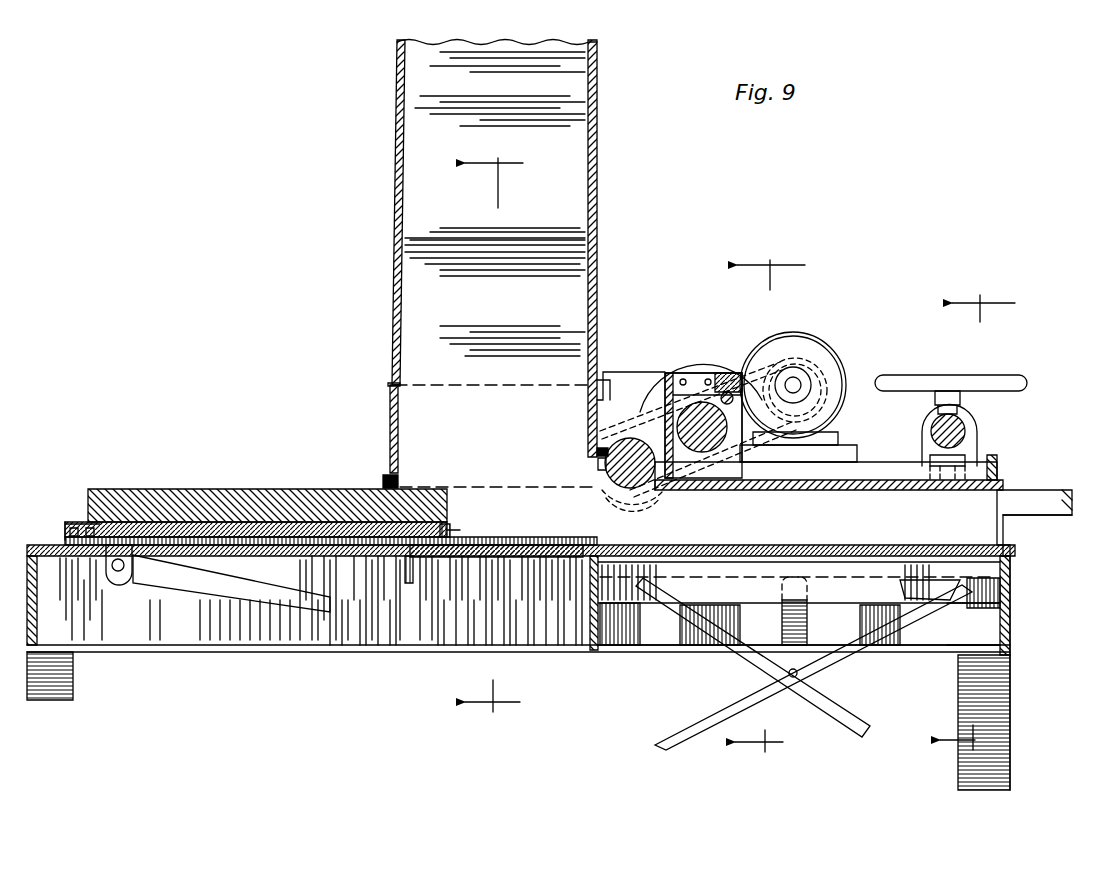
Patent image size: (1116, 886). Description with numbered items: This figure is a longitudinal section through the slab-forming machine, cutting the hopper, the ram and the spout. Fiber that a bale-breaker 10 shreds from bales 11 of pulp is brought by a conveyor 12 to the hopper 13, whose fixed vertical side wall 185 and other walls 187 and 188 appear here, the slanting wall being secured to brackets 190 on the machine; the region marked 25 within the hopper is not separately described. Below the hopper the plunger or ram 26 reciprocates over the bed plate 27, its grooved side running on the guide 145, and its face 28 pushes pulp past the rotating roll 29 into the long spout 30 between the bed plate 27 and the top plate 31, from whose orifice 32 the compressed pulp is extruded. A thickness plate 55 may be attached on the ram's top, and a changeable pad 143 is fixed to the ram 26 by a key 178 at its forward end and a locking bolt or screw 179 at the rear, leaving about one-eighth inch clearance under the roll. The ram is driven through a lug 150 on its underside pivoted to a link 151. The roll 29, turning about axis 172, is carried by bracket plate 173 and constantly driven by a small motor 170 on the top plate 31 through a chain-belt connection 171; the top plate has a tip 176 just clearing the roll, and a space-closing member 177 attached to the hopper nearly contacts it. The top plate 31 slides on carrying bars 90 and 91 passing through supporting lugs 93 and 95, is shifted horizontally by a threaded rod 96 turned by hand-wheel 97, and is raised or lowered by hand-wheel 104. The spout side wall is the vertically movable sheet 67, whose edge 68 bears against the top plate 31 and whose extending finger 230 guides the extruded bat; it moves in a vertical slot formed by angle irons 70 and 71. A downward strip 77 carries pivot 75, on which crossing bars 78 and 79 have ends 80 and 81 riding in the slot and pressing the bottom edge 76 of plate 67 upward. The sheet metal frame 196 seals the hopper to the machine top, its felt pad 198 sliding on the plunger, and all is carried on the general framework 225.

The bale-breaker 10 is at (770, 508).
The bales 11 is at (977, 522).
The conveyor 12 is at (494, 436).
The hopper 13 is at (513, 38).
The feed chamber 25 is at (495, 436).
The plunger or ram 26 is at (350, 532).
The bed plate 27 is at (848, 494).
The face of the plunger 28 is at (455, 534).
The rotating roll 29 is at (648, 492).
The spout 30 is at (765, 558).
The top plate 31 is at (830, 492).
The orifice 32 is at (960, 502).
The thickness plate 55 is at (140, 487).
The spout side-wall plate 67 is at (905, 528).
The edge of plate 67 68 is at (1046, 495).
The angle iron 70 is at (875, 605).
The angle iron 71 is at (1000, 598).
The pivot 75 is at (793, 679).
The bottom edge of plate 67 76 is at (930, 578).
The downward strip 77 is at (782, 624).
The crossing bar 78 is at (838, 654).
The crossing bar 79 is at (691, 625).
The end of bar 80 is at (973, 624).
The end of bar 81 is at (799, 605).
The carrying bar 90 is at (977, 424).
The inner carrying bar 91 is at (706, 394).
The supporting lug 93 is at (931, 420).
The supporting lug 95 is at (738, 418).
The threaded rod 96 is at (770, 376).
The hand-wheel 97 is at (736, 378).
The hand-wheel 104 is at (1004, 382).
The thickness plate or pad 143 is at (222, 500).
The guide 145 is at (562, 538).
The lug 150 is at (108, 566).
The link 151 is at (196, 586).
The motor 170 is at (830, 374).
The chain-belt connection 171 is at (660, 418).
The axis of the roller 172 is at (598, 468).
The bracket plate 173 is at (612, 383).
The tip 176 is at (684, 492).
The space-closing member 177 is at (598, 452).
The key 178 is at (443, 528).
The locking bolt or screw 179 is at (74, 524).
The fixed vertical side wall 185 is at (505, 234).
The hopper wall 187 is at (590, 238).
The hopper wall 188 is at (397, 218).
The brackets 190 is at (501, 600).
The sheet metal frame 196 is at (390, 440).
The felt pad 198 is at (386, 482).
The general framework 225 is at (75, 660).
The extending finger 230 is at (1050, 524).